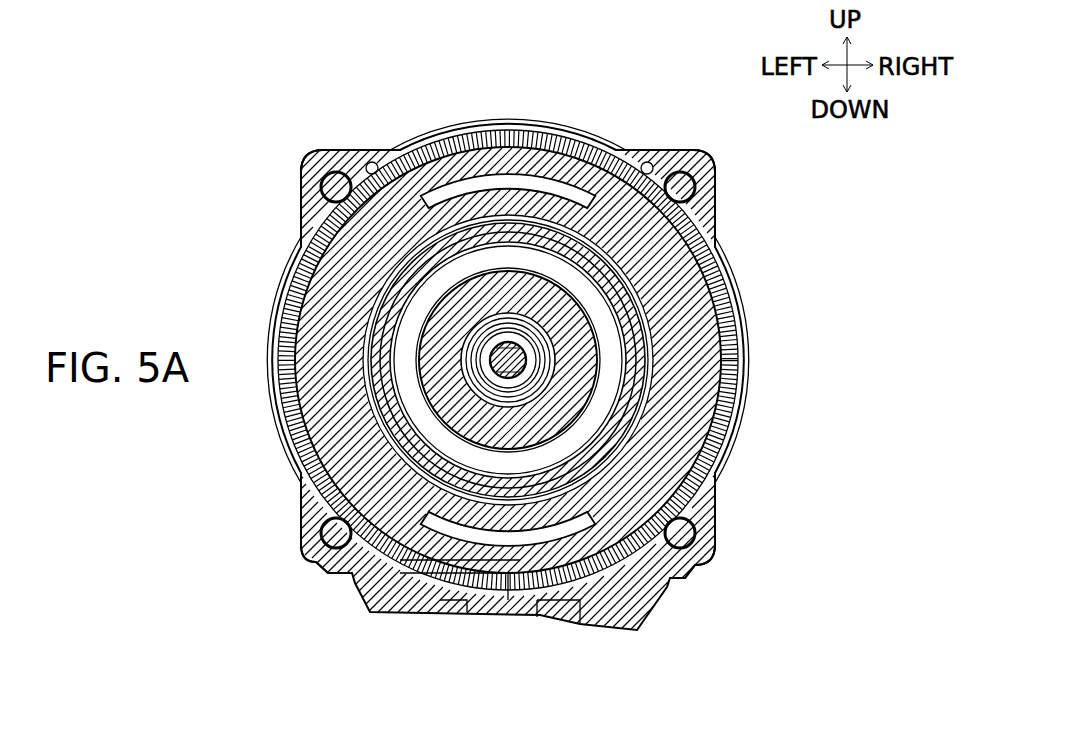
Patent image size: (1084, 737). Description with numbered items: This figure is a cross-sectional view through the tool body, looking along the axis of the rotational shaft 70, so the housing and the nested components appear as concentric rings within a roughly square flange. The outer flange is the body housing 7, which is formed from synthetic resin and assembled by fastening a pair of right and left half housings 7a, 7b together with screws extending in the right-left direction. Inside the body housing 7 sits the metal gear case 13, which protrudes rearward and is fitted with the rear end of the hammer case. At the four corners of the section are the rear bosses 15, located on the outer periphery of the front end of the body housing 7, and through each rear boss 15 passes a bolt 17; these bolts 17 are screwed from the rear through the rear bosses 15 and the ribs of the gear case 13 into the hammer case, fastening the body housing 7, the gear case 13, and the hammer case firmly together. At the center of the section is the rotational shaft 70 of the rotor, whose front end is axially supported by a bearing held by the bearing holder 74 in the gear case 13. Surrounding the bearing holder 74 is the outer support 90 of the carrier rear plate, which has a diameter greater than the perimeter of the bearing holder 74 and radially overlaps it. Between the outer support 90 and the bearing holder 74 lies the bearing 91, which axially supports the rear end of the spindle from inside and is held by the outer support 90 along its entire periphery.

The body housing 7 is at (586, 145).
The half housing 7a is at (437, 140).
The half housing 7b is at (566, 142).
The gear case 13 is at (532, 280).
The rear boss 15 is at (326, 154).
The bolt 17 is at (334, 188).
The rotational shaft 70 is at (527, 358).
The bearing holder 74 is at (625, 147).
The outer support 90 is at (491, 232).
The bearing 91 is at (513, 250).